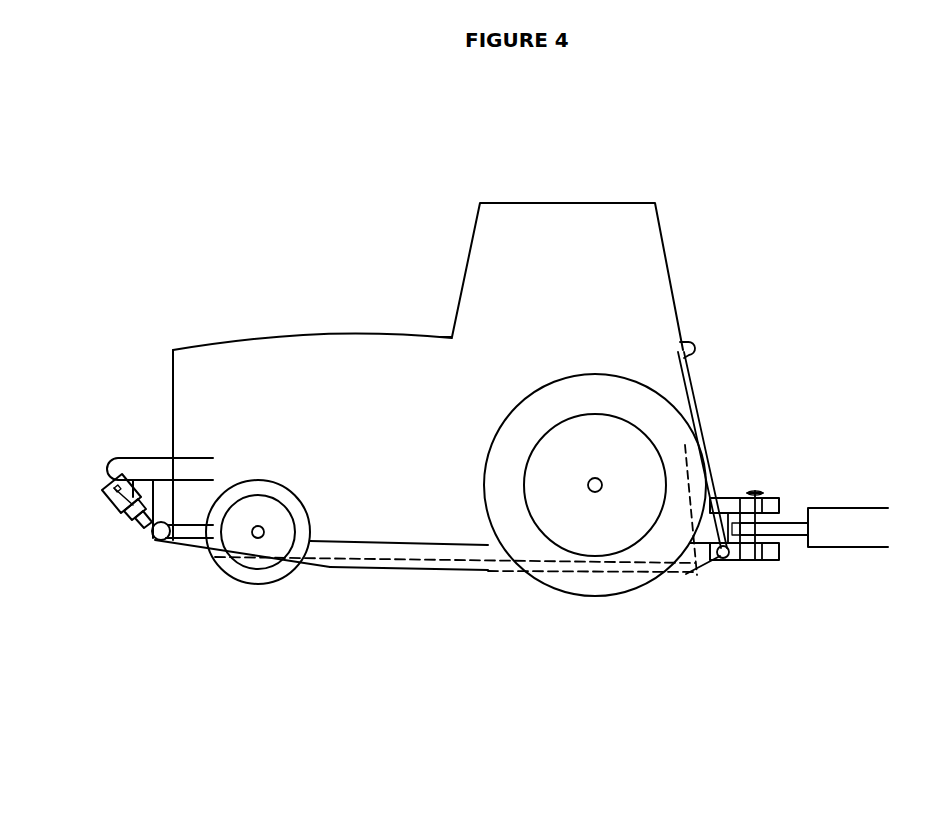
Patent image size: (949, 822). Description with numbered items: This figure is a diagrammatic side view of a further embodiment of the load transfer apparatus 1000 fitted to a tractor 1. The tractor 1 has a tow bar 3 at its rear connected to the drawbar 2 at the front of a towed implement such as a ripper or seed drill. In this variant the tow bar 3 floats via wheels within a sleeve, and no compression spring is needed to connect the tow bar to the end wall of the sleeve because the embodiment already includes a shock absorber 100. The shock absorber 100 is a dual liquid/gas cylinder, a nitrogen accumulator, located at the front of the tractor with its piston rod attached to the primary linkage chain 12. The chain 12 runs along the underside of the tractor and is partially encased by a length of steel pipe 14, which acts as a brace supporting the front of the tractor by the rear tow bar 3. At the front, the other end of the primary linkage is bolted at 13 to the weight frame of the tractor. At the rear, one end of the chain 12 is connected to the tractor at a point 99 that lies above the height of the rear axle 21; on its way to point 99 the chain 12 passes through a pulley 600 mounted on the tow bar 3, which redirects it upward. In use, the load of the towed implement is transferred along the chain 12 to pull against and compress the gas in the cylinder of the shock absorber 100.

The tractor 1 is at (580, 179).
The drawbar 2 is at (827, 527).
The tow bar 3 is at (763, 568).
The chain 12 is at (188, 557).
The bolted connection 13 is at (104, 482).
The steel pipe 14 is at (428, 562).
The rear axle 21 is at (600, 490).
The attachment point 99 is at (689, 345).
The shock absorber 100 is at (108, 519).
The pulley 600 is at (725, 560).
The load transfer apparatus 1000 is at (499, 630).